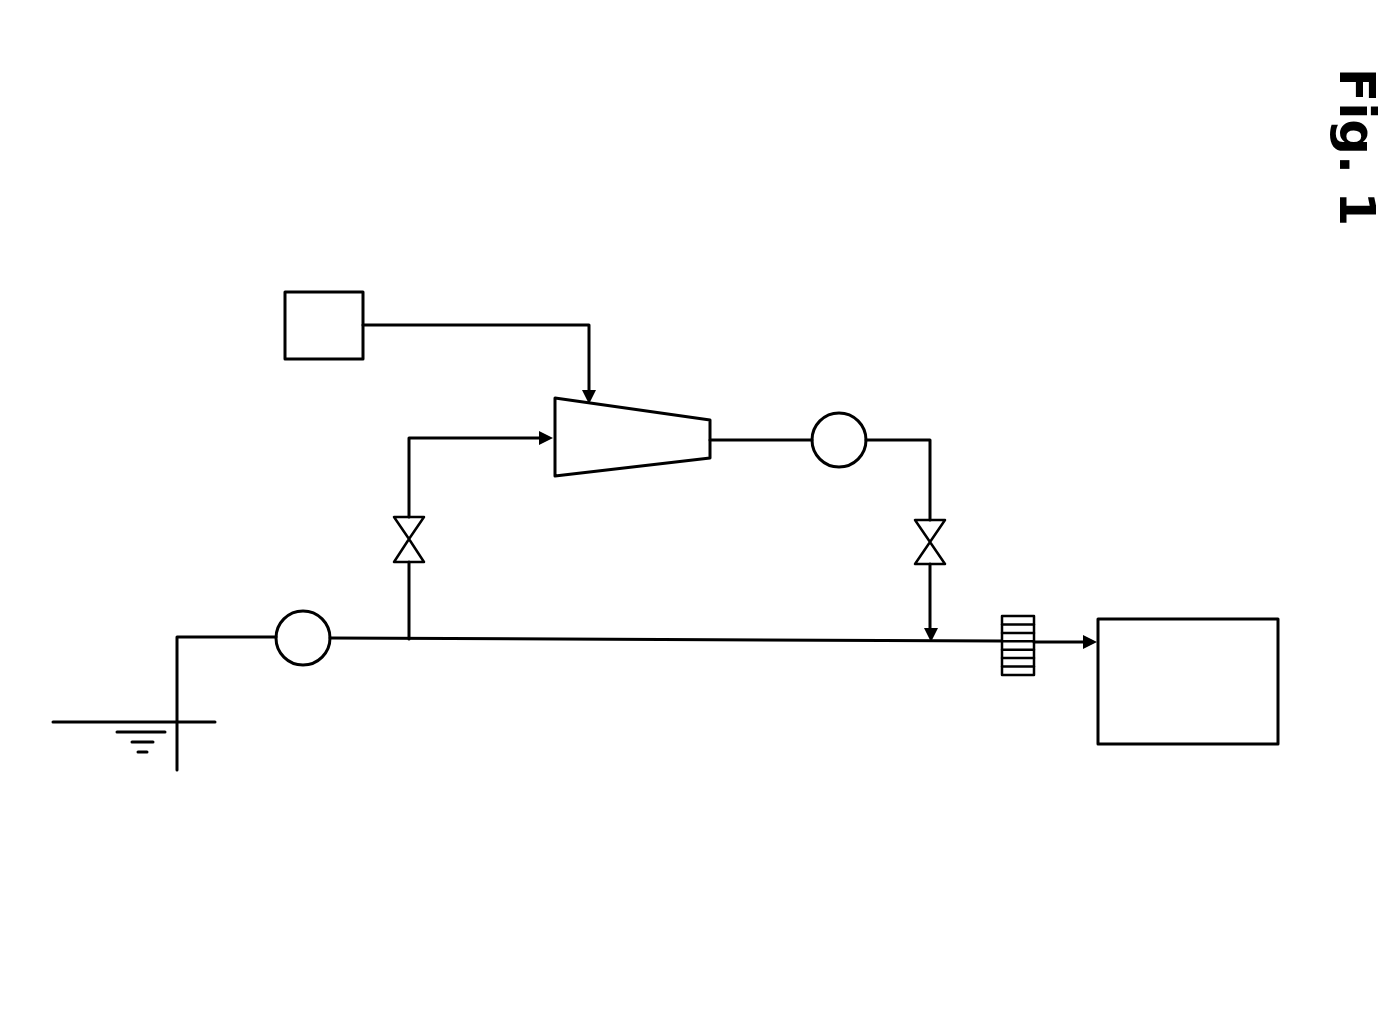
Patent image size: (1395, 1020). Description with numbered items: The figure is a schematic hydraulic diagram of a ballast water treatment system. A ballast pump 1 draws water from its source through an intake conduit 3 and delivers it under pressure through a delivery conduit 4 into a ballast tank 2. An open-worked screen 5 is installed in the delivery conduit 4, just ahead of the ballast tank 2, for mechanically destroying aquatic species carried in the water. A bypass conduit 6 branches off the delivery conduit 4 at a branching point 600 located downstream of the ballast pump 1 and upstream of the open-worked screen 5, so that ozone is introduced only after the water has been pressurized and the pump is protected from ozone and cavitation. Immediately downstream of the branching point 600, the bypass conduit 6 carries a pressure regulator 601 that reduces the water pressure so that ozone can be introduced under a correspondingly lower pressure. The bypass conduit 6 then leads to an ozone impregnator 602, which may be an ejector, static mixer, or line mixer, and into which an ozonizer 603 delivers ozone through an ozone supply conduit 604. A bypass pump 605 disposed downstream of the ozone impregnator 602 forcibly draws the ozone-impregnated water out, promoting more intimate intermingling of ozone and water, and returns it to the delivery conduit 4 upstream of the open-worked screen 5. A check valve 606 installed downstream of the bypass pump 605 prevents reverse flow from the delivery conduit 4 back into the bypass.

The ballast pump 1 is at (303, 611).
The ballast tank 2 is at (1175, 746).
The intake conduit 3 is at (230, 636).
The delivery conduit 4 is at (663, 642).
The open-worked screen 5 is at (1012, 677).
The bypass conduit 6 is at (409, 478).
The branching point 600 is at (412, 636).
The pressure regulator 601 is at (420, 543).
The ozone impregnator 602 is at (663, 407).
The ozonizer 603 is at (325, 292).
The ozone supply conduit 604 is at (493, 325).
The bypass pump 605 is at (838, 413).
The check valve 606 is at (940, 545).